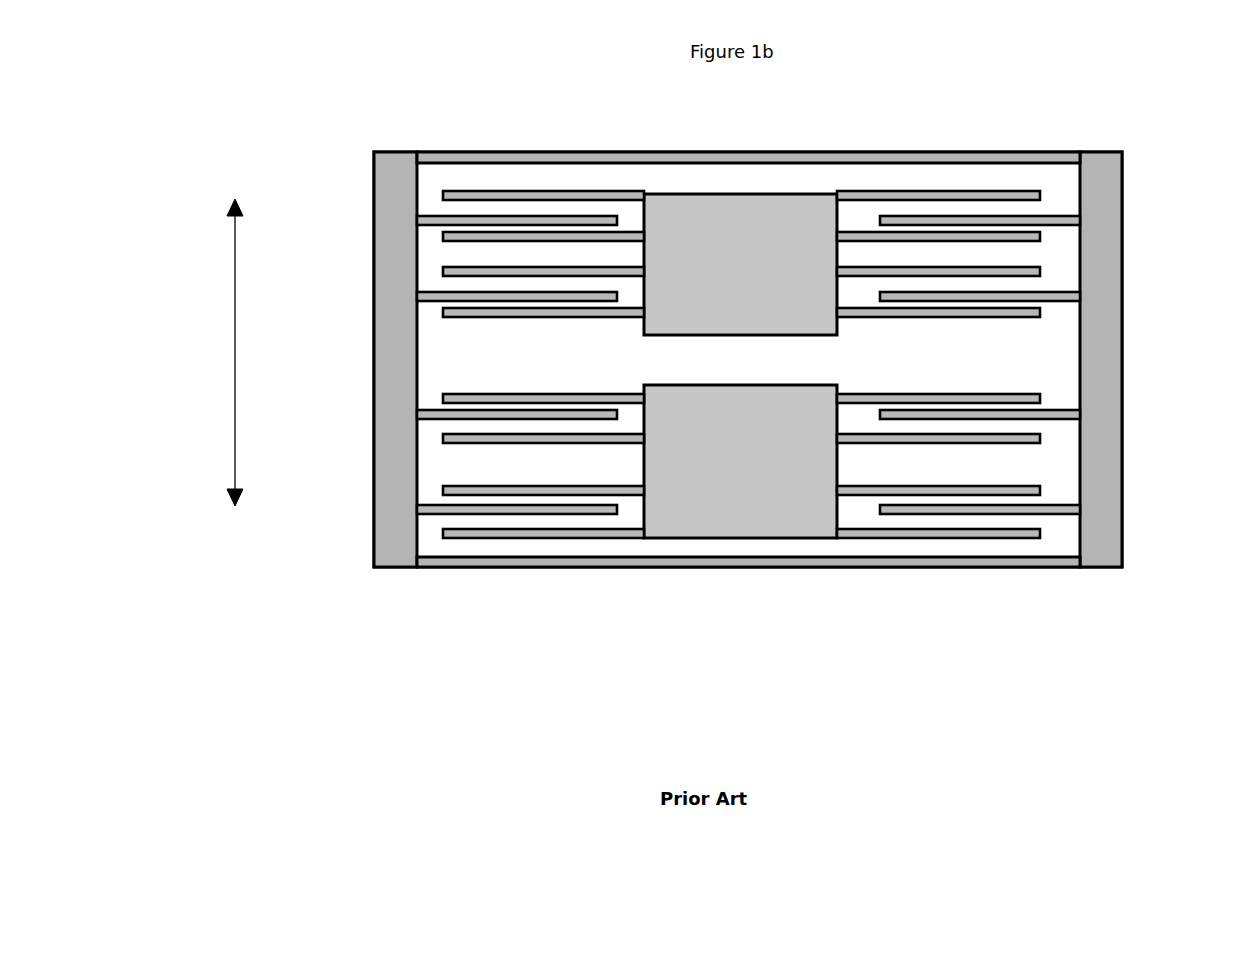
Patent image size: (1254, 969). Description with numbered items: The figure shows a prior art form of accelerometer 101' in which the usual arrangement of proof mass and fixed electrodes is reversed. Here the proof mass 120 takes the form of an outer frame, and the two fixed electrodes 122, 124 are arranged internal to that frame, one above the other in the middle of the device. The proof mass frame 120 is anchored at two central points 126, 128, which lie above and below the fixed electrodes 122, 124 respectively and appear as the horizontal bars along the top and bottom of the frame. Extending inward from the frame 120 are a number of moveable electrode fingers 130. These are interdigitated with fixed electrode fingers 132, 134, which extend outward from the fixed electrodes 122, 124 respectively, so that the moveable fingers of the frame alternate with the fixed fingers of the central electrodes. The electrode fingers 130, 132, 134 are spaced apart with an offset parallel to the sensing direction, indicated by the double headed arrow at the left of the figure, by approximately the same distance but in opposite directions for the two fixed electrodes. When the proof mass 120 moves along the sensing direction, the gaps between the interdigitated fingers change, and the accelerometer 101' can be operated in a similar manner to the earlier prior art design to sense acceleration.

The accelerometer 101' is at (802, 310).
The proof mass 120 is at (397, 475).
The fixed electrode 122 is at (789, 210).
The fixed electrode 124 is at (693, 538).
The central anchor point 126 is at (723, 153).
The central anchor point 128 is at (750, 560).
The moveable electrode fingers 130 is at (442, 222).
The fixed electrode fingers 132 is at (525, 190).
The fixed electrode fingers 134 is at (487, 538).